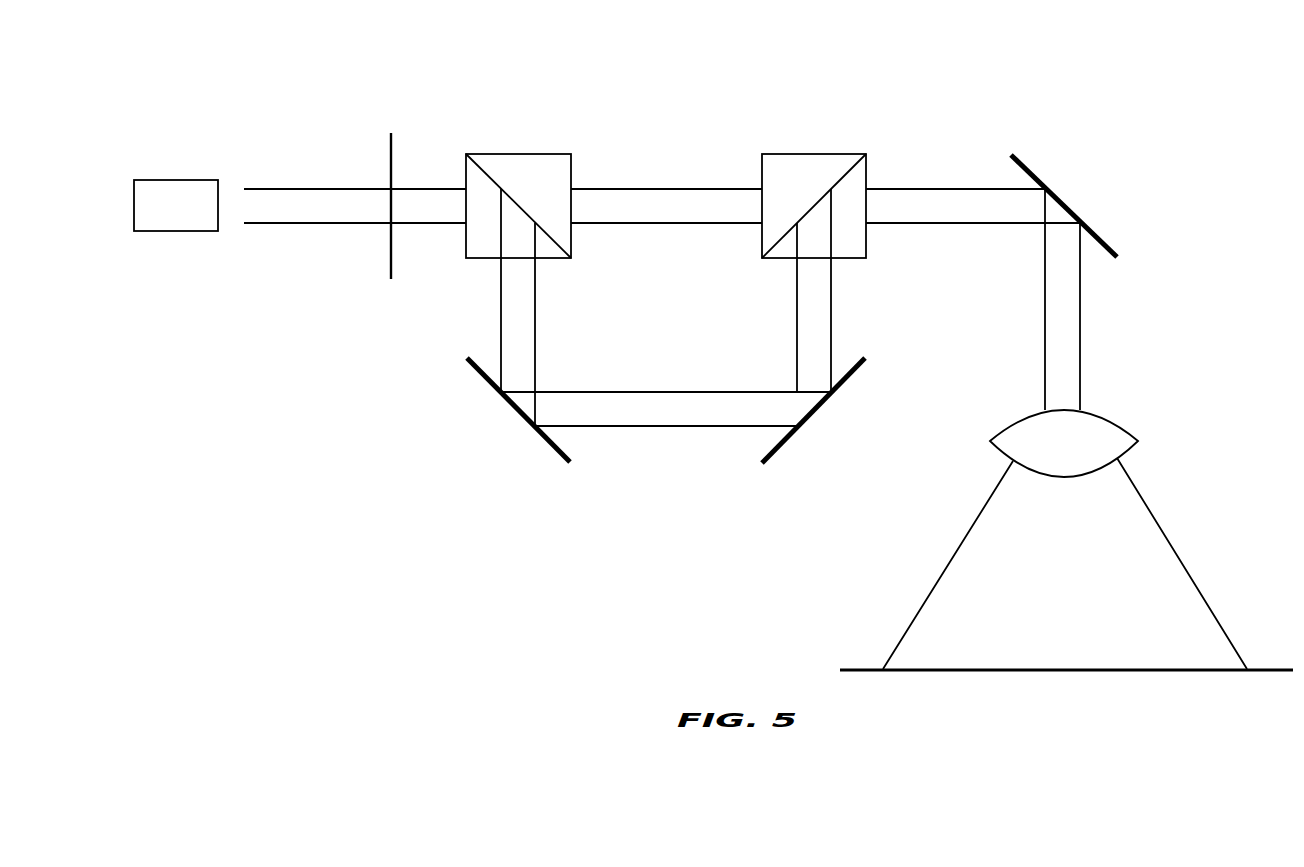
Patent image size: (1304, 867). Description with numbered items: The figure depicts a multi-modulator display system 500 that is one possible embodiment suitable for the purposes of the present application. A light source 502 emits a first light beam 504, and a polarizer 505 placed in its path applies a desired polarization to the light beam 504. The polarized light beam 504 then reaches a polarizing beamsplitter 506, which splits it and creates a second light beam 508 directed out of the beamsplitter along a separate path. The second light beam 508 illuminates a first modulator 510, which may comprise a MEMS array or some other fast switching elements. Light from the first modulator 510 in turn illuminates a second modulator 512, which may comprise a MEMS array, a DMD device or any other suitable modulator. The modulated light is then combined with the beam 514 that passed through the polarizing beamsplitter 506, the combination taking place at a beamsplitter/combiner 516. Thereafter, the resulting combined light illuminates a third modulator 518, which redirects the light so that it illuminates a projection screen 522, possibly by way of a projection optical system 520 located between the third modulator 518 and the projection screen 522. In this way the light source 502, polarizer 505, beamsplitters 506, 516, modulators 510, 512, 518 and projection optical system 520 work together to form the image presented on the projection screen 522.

The multi-modulator display system 500 is at (918, 58).
The light source 502 is at (160, 180).
The first light beam 504 is at (272, 188).
The polarizer 505 is at (391, 148).
The polarizing beamsplitter 506 is at (518, 154).
The second light beam 508 is at (501, 295).
The first modulator 510 is at (474, 375).
The second modulator 512 is at (857, 375).
The beam 514 is at (633, 188).
The beamsplitter/combiner 516 is at (800, 154).
The third modulator 518 is at (1027, 166).
The projection optical system 520 is at (992, 447).
The projection screen 522 is at (870, 668).